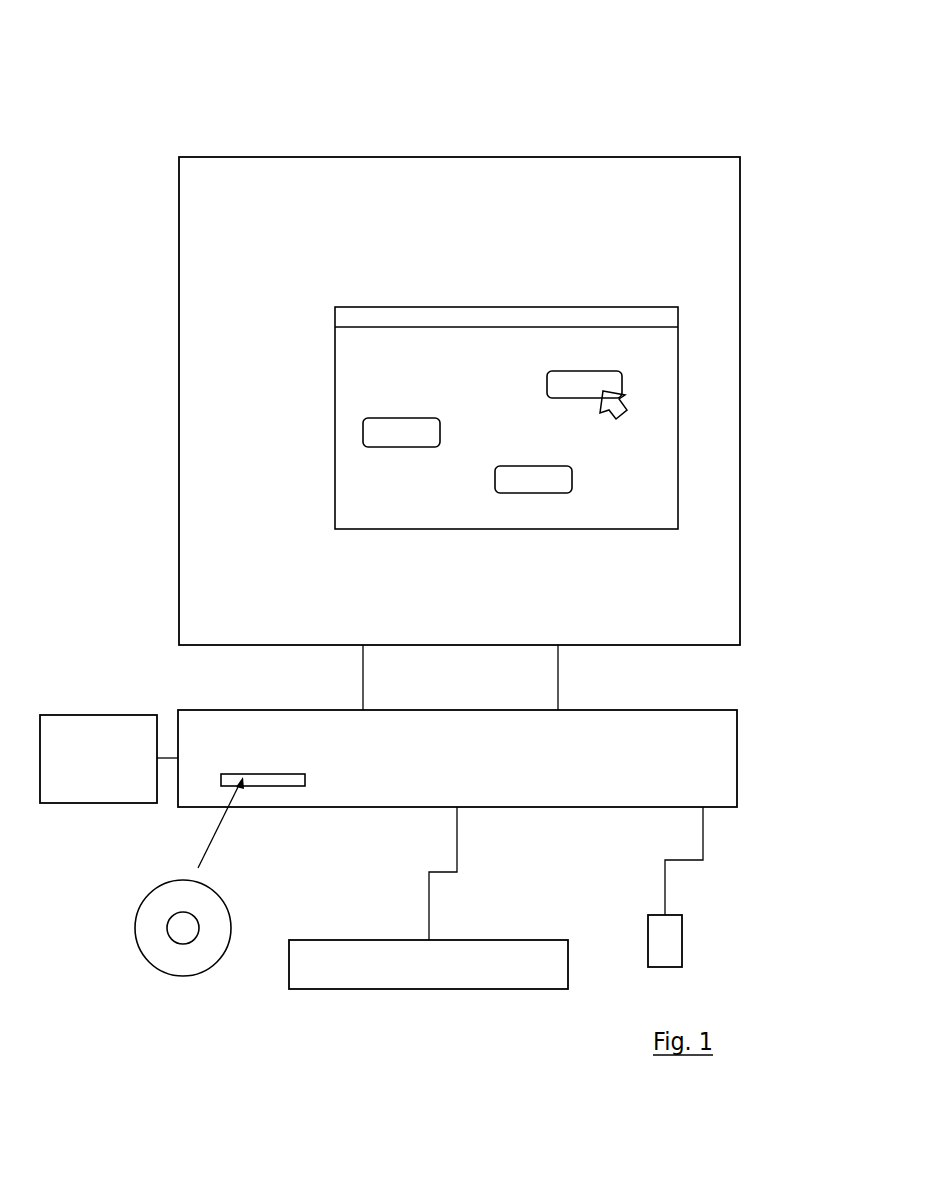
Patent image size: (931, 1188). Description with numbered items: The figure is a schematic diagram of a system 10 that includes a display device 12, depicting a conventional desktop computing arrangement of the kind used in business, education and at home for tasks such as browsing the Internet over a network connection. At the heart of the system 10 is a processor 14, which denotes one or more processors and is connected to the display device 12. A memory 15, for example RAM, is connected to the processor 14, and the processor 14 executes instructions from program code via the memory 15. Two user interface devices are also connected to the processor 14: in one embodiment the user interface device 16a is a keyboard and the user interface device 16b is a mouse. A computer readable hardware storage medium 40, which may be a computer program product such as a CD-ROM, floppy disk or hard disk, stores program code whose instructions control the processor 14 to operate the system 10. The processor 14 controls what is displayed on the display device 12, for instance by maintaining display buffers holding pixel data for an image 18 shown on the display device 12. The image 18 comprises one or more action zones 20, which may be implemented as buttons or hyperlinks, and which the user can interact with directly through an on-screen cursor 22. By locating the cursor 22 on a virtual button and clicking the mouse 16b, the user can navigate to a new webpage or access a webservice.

The system 10 is at (211, 77).
The display device 12 is at (741, 212).
The processor 14 is at (737, 753).
The memory 15 is at (98, 773).
The user interface device 16a is at (323, 989).
The user interface device 16b is at (682, 937).
The image 18 is at (228, 531).
The action zones 20 is at (363, 434).
The on-screen cursor 22 is at (627, 407).
The computer readable hardware storage medium 40 is at (232, 932).